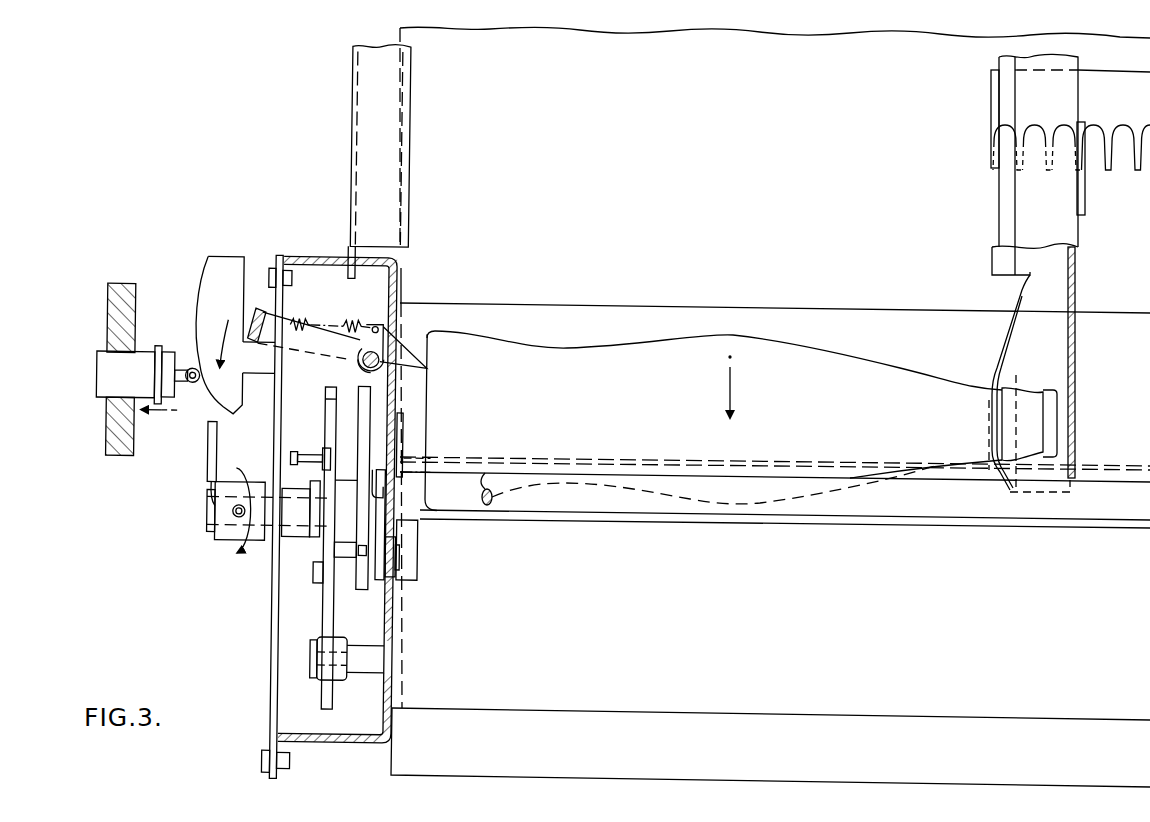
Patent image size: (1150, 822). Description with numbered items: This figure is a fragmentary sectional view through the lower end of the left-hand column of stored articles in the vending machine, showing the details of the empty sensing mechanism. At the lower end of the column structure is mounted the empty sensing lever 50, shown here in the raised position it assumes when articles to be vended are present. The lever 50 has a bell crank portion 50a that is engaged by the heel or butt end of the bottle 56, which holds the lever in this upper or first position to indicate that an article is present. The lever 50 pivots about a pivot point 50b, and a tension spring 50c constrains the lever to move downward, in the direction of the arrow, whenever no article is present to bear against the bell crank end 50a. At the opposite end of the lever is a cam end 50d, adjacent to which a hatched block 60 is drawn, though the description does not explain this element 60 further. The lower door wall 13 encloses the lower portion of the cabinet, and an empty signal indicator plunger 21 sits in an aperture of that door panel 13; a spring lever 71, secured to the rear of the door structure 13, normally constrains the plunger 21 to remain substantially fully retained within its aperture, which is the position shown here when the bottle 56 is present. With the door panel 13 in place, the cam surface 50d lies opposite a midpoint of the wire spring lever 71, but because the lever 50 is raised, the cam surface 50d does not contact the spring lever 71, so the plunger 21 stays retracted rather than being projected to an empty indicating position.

The lower door wall 13 is at (110, 454).
The empty signal indicator plunger 21 is at (95, 377).
The empty sensing lever 50 is at (301, 374).
The bell crank portion 50a is at (411, 436).
The pivot point 50b is at (425, 368).
The tension spring 50c is at (351, 324).
The cam end 50d is at (196, 295).
The bottle 56 is at (583, 348).
The stop block 60 is at (258, 308).
The spring lever 71 is at (193, 386).